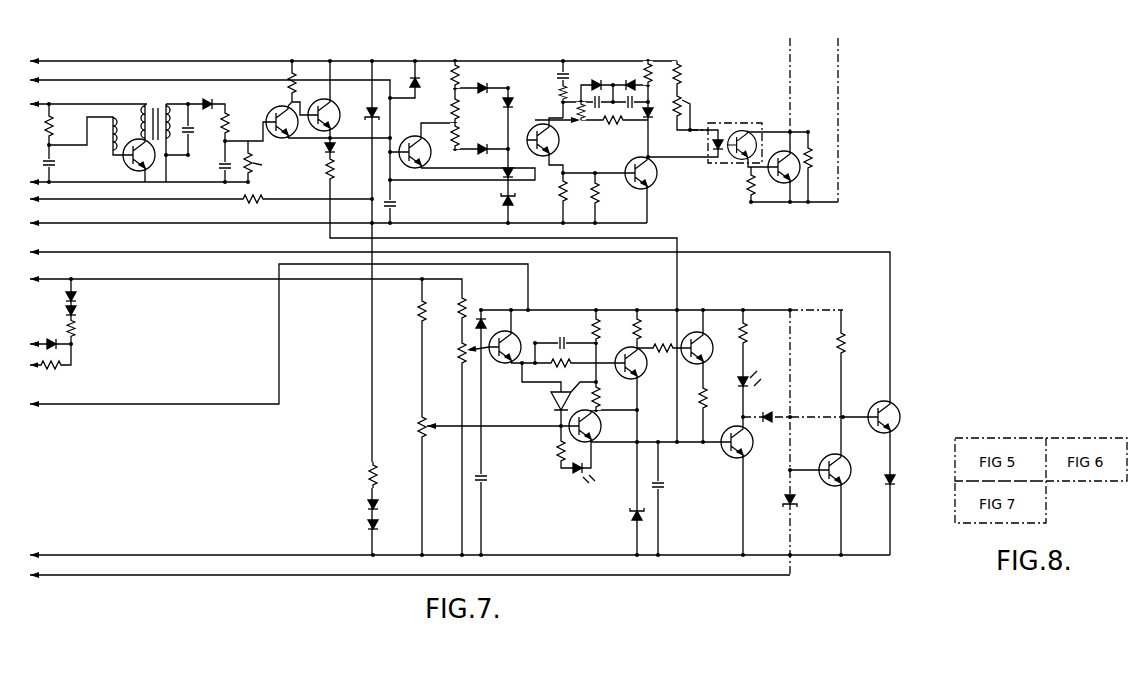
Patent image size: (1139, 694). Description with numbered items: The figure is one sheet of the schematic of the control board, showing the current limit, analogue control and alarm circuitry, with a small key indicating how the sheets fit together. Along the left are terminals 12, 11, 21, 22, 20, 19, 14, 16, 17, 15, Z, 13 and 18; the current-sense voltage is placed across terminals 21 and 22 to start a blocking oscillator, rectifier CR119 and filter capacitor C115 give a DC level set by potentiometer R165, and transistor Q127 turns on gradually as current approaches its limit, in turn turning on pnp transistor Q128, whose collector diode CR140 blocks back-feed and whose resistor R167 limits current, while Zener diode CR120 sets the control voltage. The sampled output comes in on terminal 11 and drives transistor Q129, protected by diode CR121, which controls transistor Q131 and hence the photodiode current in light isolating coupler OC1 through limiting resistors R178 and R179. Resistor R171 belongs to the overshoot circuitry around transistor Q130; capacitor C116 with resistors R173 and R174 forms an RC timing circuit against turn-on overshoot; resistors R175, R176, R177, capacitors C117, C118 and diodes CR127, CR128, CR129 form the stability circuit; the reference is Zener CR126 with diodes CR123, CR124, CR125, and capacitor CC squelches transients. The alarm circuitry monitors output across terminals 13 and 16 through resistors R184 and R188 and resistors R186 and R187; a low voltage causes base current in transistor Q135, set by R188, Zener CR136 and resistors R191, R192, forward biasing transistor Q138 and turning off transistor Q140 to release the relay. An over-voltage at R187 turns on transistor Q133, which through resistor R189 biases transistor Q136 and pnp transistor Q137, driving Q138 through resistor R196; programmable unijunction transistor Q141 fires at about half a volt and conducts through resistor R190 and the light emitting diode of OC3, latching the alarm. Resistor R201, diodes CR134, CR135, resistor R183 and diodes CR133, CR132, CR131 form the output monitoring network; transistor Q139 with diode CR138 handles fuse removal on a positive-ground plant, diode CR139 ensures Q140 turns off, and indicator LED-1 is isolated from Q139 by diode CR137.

The supply line 12 is at (342, 61).
The terminal No. 11 is at (199, 147).
The terminal 21 is at (77, 104).
The terminal 22 is at (128, 182).
The signal line 20 is at (190, 199).
The common line 19 is at (327, 223).
The signal line 14 is at (449, 322).
The terminal 16 is at (235, 413).
The signal line 17 is at (39, 344).
The signal line 15 is at (39, 326).
The signal line Z is at (269, 338).
The terminal 13 is at (449, 555).
The signal line 18 is at (399, 575).
The rectifier CR119 is at (214, 98).
The filter capacitor C115 is at (218, 170).
The potentiometer R165 is at (269, 161).
The transistor Q127 is at (274, 119).
The pnp transistor Q128 is at (338, 109).
The Zener diode CR120 is at (358, 120).
The diode CR140 is at (352, 147).
The limiting resistor R167 is at (347, 169).
The diode CR121 is at (429, 90).
The transistor Q129 is at (412, 145).
The resistor R171 is at (473, 105).
The forward silicon diode CR123 is at (486, 81).
The forward silicon diode CR124 is at (489, 102).
The forward silicon diode CR125 is at (484, 173).
The Zener diode CR126 is at (483, 200).
The capacitor CC is at (400, 204).
The transistor Q130 is at (563, 140).
The capacitor C116 is at (548, 76).
The resistor R173 is at (547, 92).
The resistor R175 is at (560, 112).
The capacitor C117 is at (594, 108).
The capacitor C118 is at (636, 106).
The diode CR127 is at (599, 80).
The diode CR128 is at (630, 80).
The resistor R176 is at (614, 125).
The resistor R177 is at (655, 72).
The diode CR129 is at (652, 118).
The resistor R178 is at (695, 74).
The potentiometer R179 is at (683, 104).
The transistor Q131 is at (658, 173).
The resistor R174 is at (549, 191).
The light isolating coupler OC1 is at (735, 134).
The diode CR131 is at (95, 296).
The diode CR132 is at (95, 321).
The diode CR133 is at (45, 335).
The resistor R183 is at (52, 372).
The resistor R184 is at (402, 311).
The potentiometer R188 is at (408, 427).
The resistor R186 is at (479, 306).
The potentiometer R187 is at (457, 350).
The resistor R201 is at (391, 475).
The diode CR134 is at (347, 504).
The diode CR135 is at (347, 524).
The transistor Q133 is at (519, 344).
The resistor R191 is at (579, 333).
The resistor R189 is at (565, 371).
The programmable unijunction transistor Q141 is at (554, 402).
The resistor R192 is at (613, 397).
The transistor Q135 is at (603, 422).
The resistor R190 is at (547, 451).
The light emitting diode of OC3 is at (562, 471).
The Zener diode CR136 is at (614, 515).
The transistor Q136 is at (645, 364).
The pnp transistor Q137 is at (697, 336).
The resistor R196 is at (692, 401).
The light emitting diode LED-1 is at (762, 368).
The diode CR137 is at (769, 407).
The transistor Q138 is at (754, 442).
The diode CR138 is at (771, 499).
The transistor Q139 is at (851, 467).
The transistor Q140 is at (901, 417).
The diode CR139 is at (915, 482).